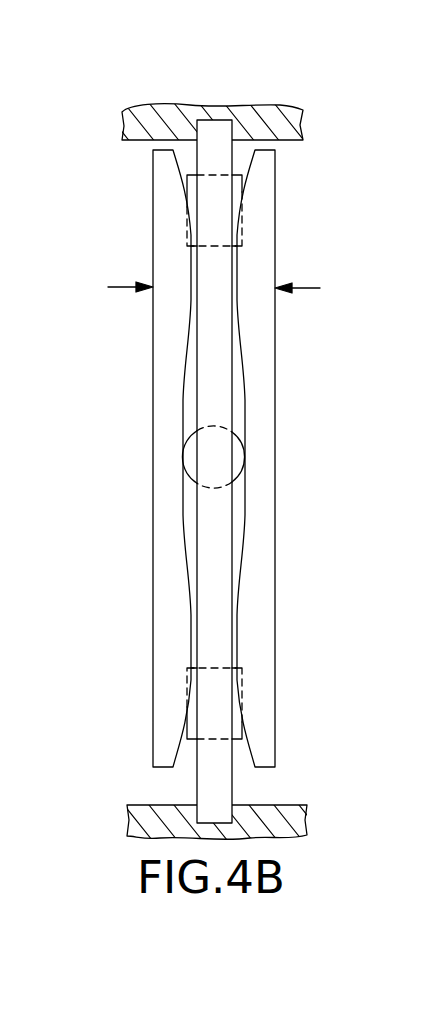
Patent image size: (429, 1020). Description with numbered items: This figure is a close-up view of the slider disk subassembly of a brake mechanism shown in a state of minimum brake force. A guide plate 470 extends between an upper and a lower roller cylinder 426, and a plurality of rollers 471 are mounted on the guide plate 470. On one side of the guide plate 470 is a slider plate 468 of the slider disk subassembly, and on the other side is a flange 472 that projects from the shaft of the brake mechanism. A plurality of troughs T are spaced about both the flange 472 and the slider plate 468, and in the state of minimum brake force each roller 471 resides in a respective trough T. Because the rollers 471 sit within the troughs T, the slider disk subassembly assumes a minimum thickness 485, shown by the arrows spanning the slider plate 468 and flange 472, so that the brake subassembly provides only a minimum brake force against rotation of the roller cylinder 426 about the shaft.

The roller cylinder 426 is at (298, 118).
The slider plate 468 is at (168, 678).
The guide plate 470 is at (217, 585).
The rollers 471 is at (238, 183).
The flange 472 is at (258, 375).
The minimum thickness 485 is at (305, 288).
The troughs T is at (240, 237).